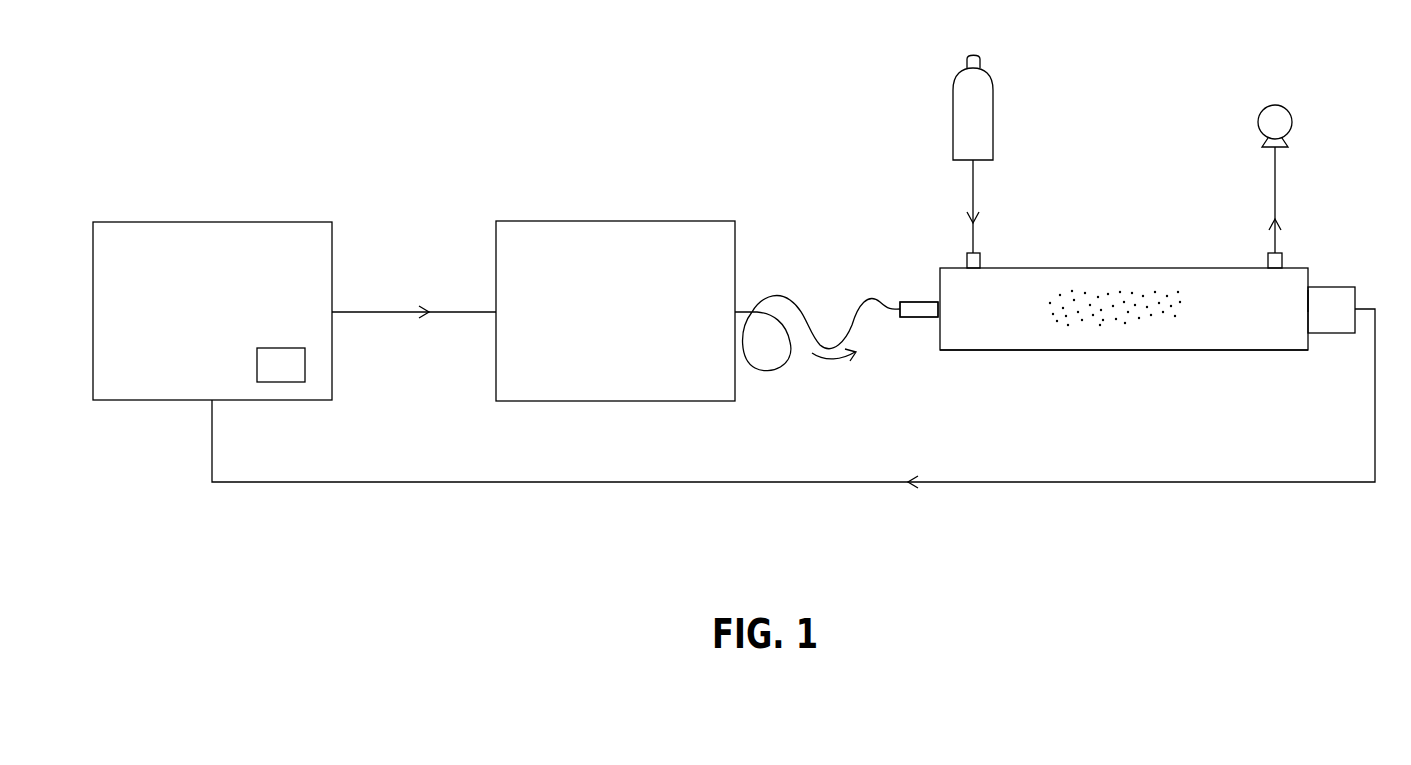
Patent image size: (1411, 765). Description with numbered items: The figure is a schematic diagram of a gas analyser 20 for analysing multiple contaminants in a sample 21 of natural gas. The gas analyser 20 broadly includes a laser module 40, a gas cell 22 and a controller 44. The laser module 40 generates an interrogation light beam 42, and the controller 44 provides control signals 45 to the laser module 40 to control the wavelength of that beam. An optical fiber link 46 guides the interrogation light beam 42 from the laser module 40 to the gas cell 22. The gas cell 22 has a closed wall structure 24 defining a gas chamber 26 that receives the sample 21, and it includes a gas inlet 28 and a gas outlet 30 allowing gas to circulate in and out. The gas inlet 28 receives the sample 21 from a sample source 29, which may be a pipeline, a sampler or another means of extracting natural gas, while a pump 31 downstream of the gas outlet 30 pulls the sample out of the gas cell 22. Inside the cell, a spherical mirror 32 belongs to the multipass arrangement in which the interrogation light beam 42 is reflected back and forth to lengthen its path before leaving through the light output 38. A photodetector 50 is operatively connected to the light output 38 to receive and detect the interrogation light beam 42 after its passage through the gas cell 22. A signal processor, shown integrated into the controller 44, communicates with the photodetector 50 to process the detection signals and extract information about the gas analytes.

The gas analyser 20 is at (757, 120).
The sample 21 is at (1147, 308).
The gas cell 22 is at (1157, 259).
The closed wall structure 24 is at (1000, 350).
The gas chamber 26 is at (1263, 332).
The gas inlet 28 is at (982, 260).
The sample source 29 is at (993, 124).
The gas outlet 30 is at (1265, 262).
The pump 31 is at (1287, 108).
The spherical mirror 32 is at (934, 302).
The light output 38 is at (1308, 303).
The laser module 40 is at (616, 221).
The interrogation light beam 42 is at (832, 362).
The controller 44 is at (232, 222).
The control signals 45 is at (457, 310).
The optical fiber link 46 is at (793, 297).
The photodetector 50 is at (1330, 320).